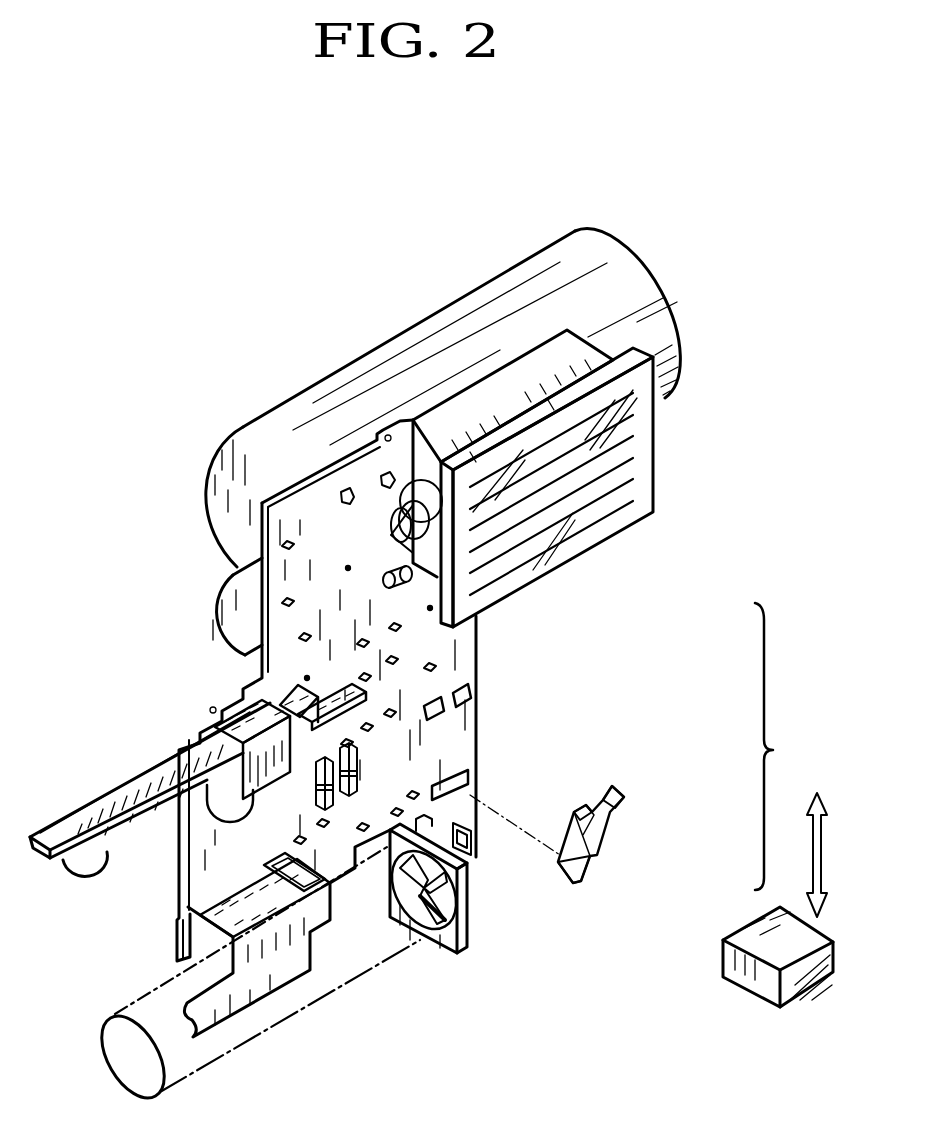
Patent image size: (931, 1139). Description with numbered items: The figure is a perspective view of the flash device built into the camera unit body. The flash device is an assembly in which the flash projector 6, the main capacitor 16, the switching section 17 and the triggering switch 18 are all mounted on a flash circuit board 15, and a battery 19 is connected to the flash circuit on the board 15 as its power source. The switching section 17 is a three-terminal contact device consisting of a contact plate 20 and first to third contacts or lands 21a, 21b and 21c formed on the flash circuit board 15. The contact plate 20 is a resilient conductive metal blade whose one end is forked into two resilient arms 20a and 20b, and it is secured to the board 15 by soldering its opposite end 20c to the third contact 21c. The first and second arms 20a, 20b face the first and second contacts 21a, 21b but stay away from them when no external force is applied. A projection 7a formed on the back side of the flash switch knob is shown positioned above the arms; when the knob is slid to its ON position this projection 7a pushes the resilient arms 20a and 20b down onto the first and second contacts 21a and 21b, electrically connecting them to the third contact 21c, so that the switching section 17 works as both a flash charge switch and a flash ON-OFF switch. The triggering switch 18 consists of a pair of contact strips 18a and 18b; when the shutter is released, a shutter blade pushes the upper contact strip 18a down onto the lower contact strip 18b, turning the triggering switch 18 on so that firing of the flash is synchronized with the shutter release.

The flash projector 6 is at (647, 442).
The projection 7a is at (750, 982).
The flash circuit board 15 is at (185, 878).
The main capacitor 16 is at (424, 333).
The switching section 17 is at (791, 760).
The triggering switch 18 is at (50, 792).
The upper contact strip 18a is at (122, 782).
The lower contact strip 18b is at (80, 876).
The battery 19 is at (283, 1023).
The contact plate 20 is at (600, 853).
The first resilient arm 20a is at (584, 812).
The second resilient arm 20b is at (612, 797).
The soldered end of contact plate 20c is at (587, 880).
The first contact 21a is at (443, 697).
The second contact 21b is at (472, 690).
The third contact 21c is at (480, 765).